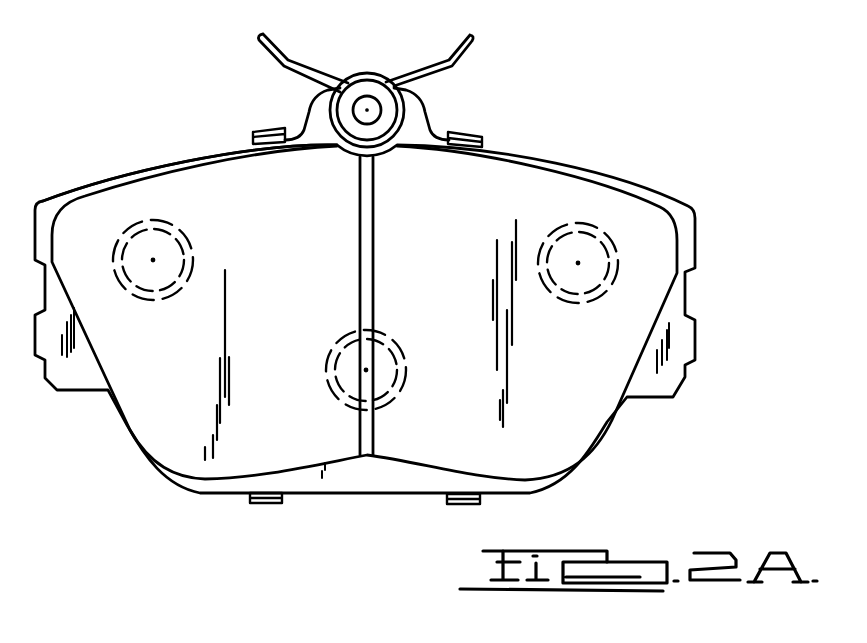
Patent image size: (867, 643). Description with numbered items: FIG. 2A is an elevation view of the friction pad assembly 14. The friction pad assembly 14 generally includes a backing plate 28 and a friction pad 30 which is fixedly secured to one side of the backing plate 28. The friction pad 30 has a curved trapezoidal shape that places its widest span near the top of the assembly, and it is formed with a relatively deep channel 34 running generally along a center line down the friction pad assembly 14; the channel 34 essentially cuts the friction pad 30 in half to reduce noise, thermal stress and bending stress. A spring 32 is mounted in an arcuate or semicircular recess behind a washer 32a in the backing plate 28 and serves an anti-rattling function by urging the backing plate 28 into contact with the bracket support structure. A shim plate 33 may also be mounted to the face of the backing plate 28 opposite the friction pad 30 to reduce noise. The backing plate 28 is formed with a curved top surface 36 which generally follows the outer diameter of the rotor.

The friction pad assembly 14 is at (98, 163).
The backing plate 28 is at (348, 477).
The friction pad 30 is at (153, 420).
The spring 32 is at (473, 44).
The washer 32a is at (390, 107).
The shim plate 33 is at (262, 130).
The channel 34 is at (368, 217).
The curved top surface 36 is at (152, 164).